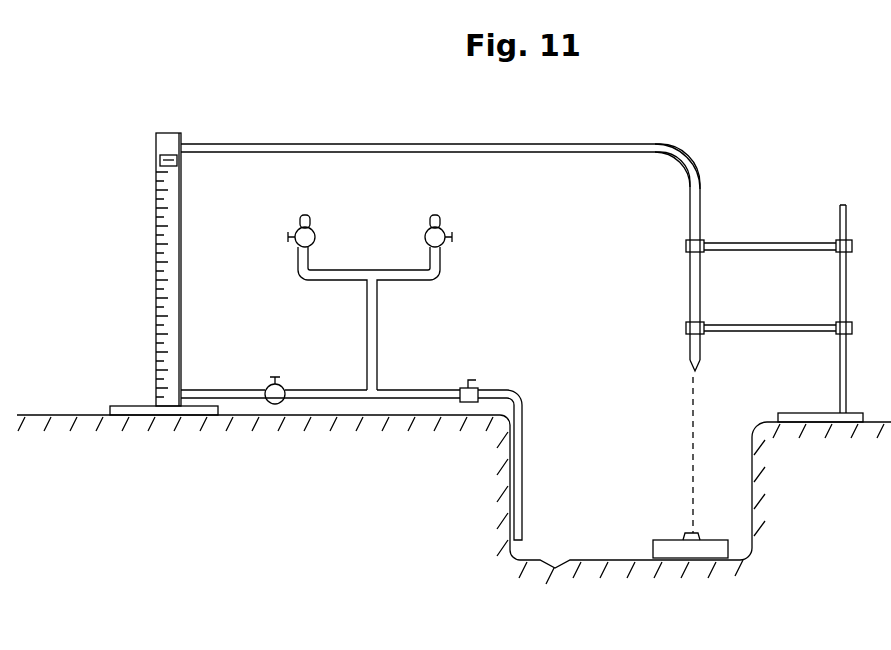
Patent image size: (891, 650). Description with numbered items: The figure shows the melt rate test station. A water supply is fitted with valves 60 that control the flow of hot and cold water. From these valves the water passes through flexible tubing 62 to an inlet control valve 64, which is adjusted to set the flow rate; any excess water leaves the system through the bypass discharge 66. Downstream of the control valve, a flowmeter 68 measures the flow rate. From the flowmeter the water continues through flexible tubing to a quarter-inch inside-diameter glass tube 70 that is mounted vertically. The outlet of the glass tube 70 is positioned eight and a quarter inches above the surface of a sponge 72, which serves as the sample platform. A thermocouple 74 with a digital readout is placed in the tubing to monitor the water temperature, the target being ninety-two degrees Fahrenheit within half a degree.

The valves 60 is at (425, 235).
The flexible tubing 62 is at (344, 144).
The inlet control valve 64 is at (270, 385).
The bypass discharge 66 is at (522, 507).
The flowmeter 68 is at (156, 143).
The glass tube 70 is at (700, 291).
The sponge 72 is at (653, 544).
The thermocouple 74 is at (695, 162).